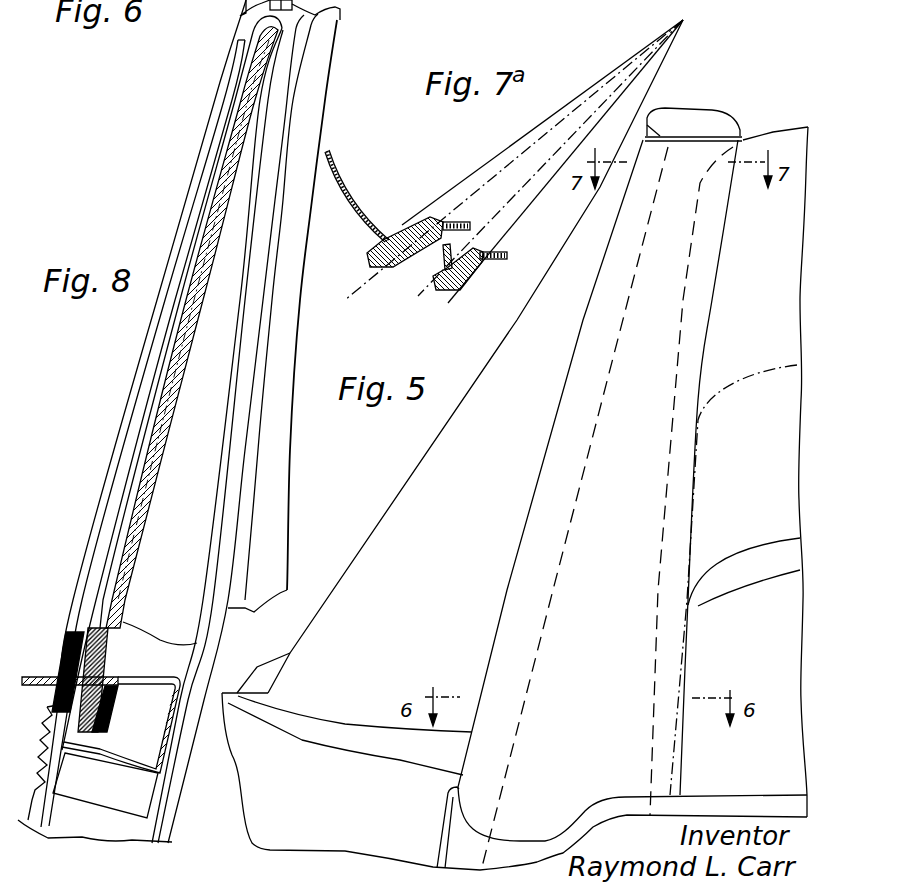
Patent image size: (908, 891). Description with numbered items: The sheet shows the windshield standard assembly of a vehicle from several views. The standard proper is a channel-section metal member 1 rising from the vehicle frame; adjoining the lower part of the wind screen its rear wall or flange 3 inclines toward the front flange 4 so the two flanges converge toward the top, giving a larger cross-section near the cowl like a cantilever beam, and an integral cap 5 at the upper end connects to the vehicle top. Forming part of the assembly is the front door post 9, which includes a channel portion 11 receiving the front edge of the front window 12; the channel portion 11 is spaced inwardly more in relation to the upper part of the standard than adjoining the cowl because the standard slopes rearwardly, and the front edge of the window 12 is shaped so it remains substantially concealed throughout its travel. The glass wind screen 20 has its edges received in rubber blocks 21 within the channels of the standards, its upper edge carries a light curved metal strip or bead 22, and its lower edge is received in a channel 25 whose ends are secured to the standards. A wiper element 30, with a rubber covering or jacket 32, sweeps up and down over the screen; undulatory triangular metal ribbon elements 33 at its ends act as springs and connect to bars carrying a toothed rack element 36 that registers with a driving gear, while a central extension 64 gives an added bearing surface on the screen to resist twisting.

In FIG. 8, the metal member 1 is at (178, 768).
In FIG. 8, the rear wall or flange 3 is at (228, 402).
In FIG. 8, the front flange 4 is at (165, 375).
In FIG. 5, the cap 5 is at (700, 117).
In FIG. 8, the front door post 9 is at (345, 82).
In FIG. 7A, the front door post 9 is at (390, 266).
In FIG. 5, the front door post 9 is at (702, 298).
In FIG. 8, the channel portion 11 is at (272, 452).
In FIG. 5, the front window 12 is at (763, 140).
In FIG. 8, the glass wind screen 20 is at (210, 237).
In FIG. 7A, the glass wind screen 20 is at (348, 186).
In FIG. 5, the glass wind screen 20 is at (525, 318).
In FIG. 8, the rubber blocks 21 is at (169, 556).
In FIG. 8, the curved metal strip or bead 22 is at (248, 18).
In FIG. 8, the channel 25 is at (98, 733).
In FIG. 8, the wiper element 30 is at (72, 656).
In FIG. 5, the wiper element 30 is at (320, 714).
In FIG. 8, the covering portion or jacket 32 is at (80, 623).
In FIG. 8, the triangular shaped metal ribbon elements 33 is at (95, 655).
In FIG. 8, the rack element 36 is at (58, 722).
In FIG. 5, the central extension 64 is at (267, 670).